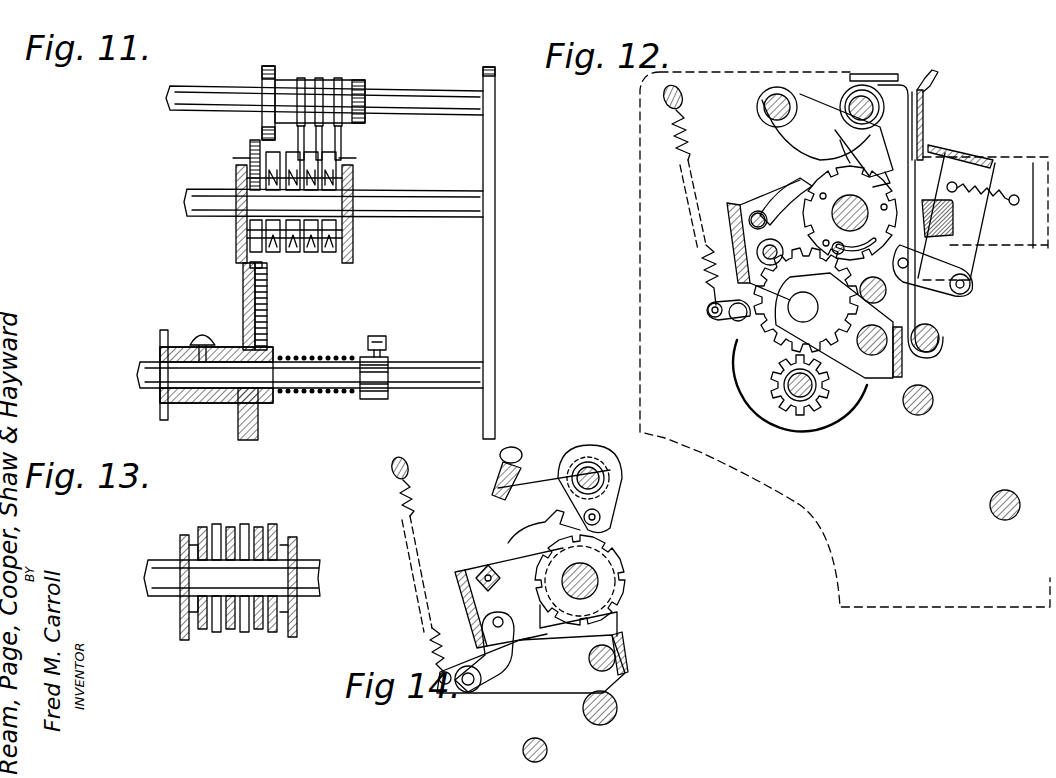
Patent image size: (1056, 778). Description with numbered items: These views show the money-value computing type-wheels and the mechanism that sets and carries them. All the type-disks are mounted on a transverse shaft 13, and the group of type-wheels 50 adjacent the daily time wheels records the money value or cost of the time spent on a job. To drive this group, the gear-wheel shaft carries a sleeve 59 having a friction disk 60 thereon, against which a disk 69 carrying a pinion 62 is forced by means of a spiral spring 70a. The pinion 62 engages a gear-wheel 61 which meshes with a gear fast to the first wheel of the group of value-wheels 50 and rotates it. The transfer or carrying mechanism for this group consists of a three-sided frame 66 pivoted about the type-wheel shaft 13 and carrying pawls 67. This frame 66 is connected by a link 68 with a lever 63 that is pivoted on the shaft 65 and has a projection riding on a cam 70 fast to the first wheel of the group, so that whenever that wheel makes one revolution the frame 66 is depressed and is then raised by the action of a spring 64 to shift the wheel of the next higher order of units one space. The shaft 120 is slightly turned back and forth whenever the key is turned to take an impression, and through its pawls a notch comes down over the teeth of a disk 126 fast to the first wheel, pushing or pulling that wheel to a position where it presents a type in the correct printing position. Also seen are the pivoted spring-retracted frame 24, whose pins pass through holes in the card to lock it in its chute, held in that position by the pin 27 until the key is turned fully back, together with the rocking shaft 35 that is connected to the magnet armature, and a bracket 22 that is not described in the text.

In FIG. 11, the shaft 120 is at (408, 100).
In FIG. 12, the shaft 120 is at (861, 102).
In FIG. 14, the shaft 120 is at (600, 478).
In FIG. 11, the transverse shaft 13 is at (413, 219).
In FIG. 12, the transverse shaft 13 is at (870, 196).
In FIG. 13, the transverse shaft 13 is at (323, 579).
In FIG. 14, the transverse shaft 13 is at (600, 578).
In FIG. 11, the group of type-wheels 50 is at (285, 163).
In FIG. 12, the group of type-wheels 50 is at (873, 187).
In FIG. 11, the three-sided frame 66 is at (352, 184).
In FIG. 12, the three-sided frame 66 is at (743, 208).
In FIG. 14, the three-sided frame 66 is at (503, 563).
In FIG. 11, the pawls 67 is at (280, 195).
In FIG. 11, the lever 63 is at (250, 262).
In FIG. 12, the lever 63 is at (708, 313).
In FIG. 14, the lever 63 is at (511, 688).
In FIG. 11, the gear-wheel 61 is at (265, 283).
In FIG. 12, the gear-wheel 61 is at (787, 177).
In FIG. 11, the friction disk 60 is at (250, 322).
In FIG. 11, the disk 69 is at (268, 318).
In FIG. 12, the disk 69 is at (815, 430).
In FIG. 11, the sleeve 59 is at (208, 402).
In FIG. 11, the pinion 62 is at (270, 403).
In FIG. 12, the pinion 62 is at (776, 390).
In FIG. 11, the spiral spring 70a is at (342, 394).
In FIG. 12, the spiral spring 70a is at (820, 395).
In FIG. 12, the spring 64 is at (692, 206).
In FIG. 14, the spring 64 is at (414, 592).
In FIG. 12, the link 68 is at (771, 243).
In FIG. 14, the link 68 is at (497, 670).
In FIG. 12, the frame 24 is at (942, 188).
In FIG. 12, the bracket 22 is at (914, 313).
In FIG. 12, the shaft 65 is at (905, 295).
In FIG. 14, the shaft 65 is at (618, 652).
In FIG. 12, the pin 27 is at (970, 288).
In FIG. 12, the shaft 35 is at (997, 517).
In FIG. 14, the disk 126 is at (586, 556).
In FIG. 14, the cam 70 is at (556, 627).